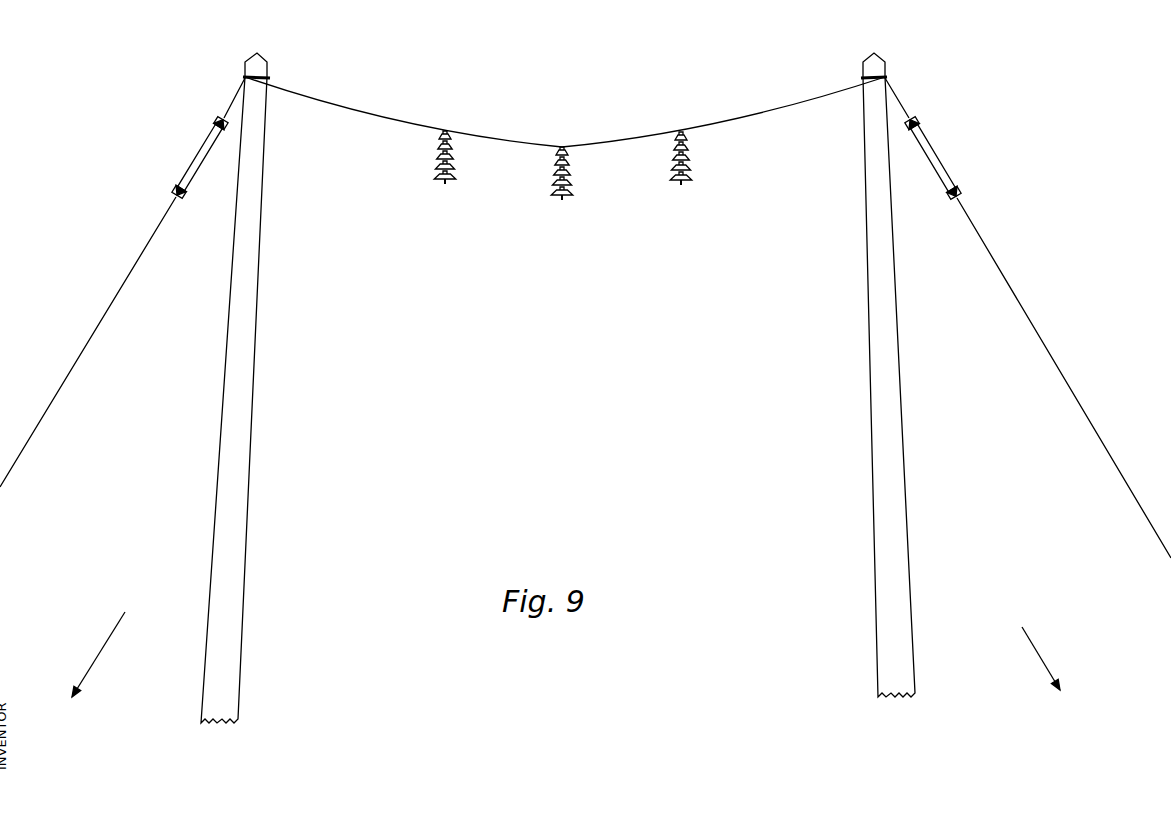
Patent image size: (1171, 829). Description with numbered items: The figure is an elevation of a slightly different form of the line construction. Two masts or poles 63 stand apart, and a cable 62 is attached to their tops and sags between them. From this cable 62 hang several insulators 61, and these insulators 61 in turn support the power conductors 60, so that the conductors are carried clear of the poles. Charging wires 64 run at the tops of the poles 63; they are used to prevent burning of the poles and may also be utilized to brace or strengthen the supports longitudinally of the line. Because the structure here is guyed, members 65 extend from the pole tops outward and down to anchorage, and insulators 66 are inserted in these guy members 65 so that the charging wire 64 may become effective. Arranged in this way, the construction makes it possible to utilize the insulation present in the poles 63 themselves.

The power conductor 60 is at (443, 184).
The insulator 61 is at (450, 178).
The cable 62 is at (620, 138).
The pole 63 is at (245, 357).
The charging wire 64 is at (278, 79).
The guy member 65 is at (80, 348).
The insulator 66 is at (200, 140).